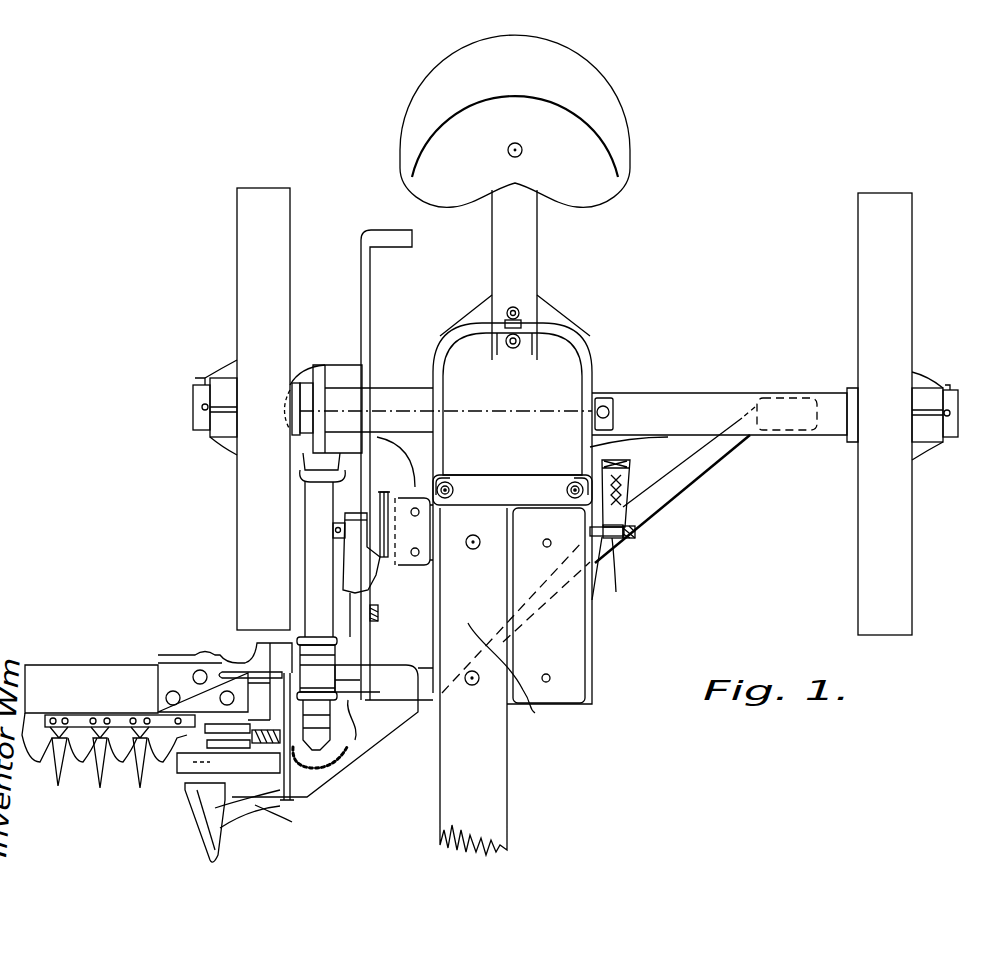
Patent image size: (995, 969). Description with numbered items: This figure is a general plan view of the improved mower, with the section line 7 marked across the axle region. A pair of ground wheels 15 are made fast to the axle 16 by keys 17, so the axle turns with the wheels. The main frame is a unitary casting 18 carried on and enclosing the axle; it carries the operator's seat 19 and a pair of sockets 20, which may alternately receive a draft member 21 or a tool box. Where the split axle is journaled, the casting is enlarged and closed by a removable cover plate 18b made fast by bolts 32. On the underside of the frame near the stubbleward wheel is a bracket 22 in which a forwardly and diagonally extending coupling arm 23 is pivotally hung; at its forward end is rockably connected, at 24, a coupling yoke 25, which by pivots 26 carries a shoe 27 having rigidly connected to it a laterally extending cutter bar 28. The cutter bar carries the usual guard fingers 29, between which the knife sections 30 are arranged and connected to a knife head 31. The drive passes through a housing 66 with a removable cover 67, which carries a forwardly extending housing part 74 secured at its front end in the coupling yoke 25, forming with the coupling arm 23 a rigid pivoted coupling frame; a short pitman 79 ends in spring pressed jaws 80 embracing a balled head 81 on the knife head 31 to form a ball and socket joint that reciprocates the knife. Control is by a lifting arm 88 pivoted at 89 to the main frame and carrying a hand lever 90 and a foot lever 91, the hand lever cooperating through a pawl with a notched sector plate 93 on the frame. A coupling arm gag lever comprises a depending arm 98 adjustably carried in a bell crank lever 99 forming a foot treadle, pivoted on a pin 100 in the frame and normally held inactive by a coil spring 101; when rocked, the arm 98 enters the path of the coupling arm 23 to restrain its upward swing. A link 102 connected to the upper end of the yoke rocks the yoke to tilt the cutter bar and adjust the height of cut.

The axle 7 is at (405, 400).
The ground wheels 15 is at (237, 310).
The axle 16 is at (200, 422).
The keys 17 is at (193, 383).
The unitary casting 18 is at (698, 395).
The removable cover plate 18b is at (578, 366).
The operator's seat 19 is at (606, 148).
The sockets 20 is at (556, 683).
The draft member 21 is at (488, 755).
The bracket 22 is at (800, 437).
The coupling arm 23 is at (670, 485).
The rockable connection 24 is at (430, 695).
The coupling yoke 25 is at (375, 730).
The pivots 26 is at (265, 642).
The shoe 27 is at (190, 797).
The cutter bar 28 is at (88, 668).
The guard fingers 29 is at (62, 792).
The knife sections 30 is at (122, 756).
The knife head 31 is at (170, 722).
The bolts 32 is at (513, 348).
The housing 66 is at (355, 370).
The removable cover 67 is at (302, 383).
The housing part 74 is at (305, 492).
The pitman 79 is at (318, 745).
The spring pressed jaws 80 is at (233, 753).
The balled head 81 is at (185, 735).
The lifting arm 88 is at (353, 597).
The pivot 89 is at (333, 531).
The hand lever 90 is at (378, 612).
The foot lever 91 is at (372, 275).
The notched sector plate 93 is at (380, 505).
The depending arm 98 is at (625, 508).
The bell crank lever 99 is at (628, 513).
The pin 100 is at (603, 545).
The coil spring 101 is at (630, 538).
The link 102 is at (355, 750).